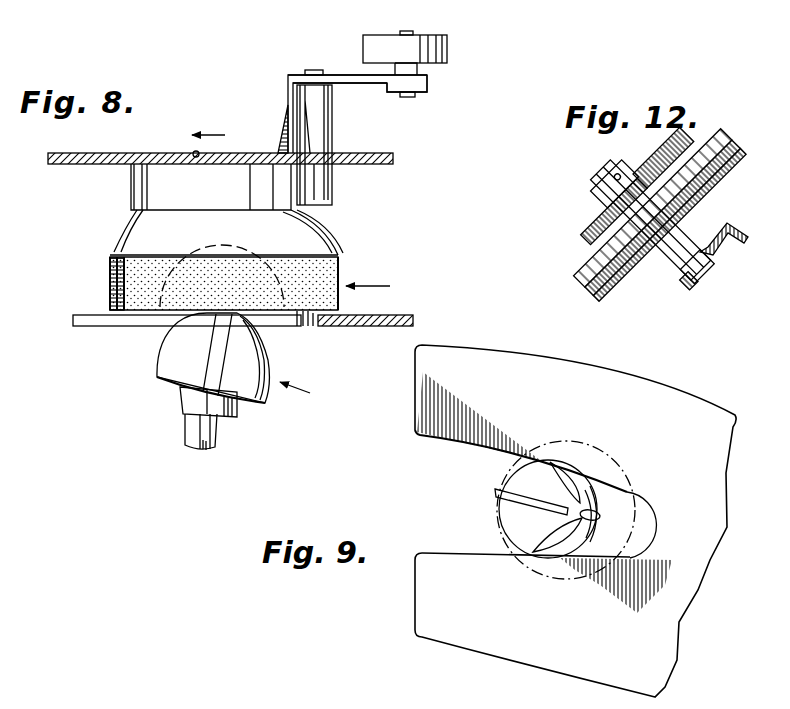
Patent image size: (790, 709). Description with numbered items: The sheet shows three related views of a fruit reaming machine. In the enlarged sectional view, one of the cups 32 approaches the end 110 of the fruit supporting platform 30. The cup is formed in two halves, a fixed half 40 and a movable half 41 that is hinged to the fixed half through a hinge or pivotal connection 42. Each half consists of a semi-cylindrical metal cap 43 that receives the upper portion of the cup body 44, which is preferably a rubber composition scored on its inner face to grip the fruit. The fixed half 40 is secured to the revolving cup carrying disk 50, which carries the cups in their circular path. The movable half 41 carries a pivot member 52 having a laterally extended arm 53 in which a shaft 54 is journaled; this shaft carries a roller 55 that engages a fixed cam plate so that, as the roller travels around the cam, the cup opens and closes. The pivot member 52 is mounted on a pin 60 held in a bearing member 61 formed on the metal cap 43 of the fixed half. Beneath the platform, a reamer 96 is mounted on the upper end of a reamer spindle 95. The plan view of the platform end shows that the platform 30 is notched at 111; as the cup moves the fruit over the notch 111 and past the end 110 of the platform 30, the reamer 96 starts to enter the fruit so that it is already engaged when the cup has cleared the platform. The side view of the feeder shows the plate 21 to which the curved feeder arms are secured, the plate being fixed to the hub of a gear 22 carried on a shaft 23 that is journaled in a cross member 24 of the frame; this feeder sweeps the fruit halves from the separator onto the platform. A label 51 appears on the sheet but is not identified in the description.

In FIG. 12, the plate 21 is at (680, 142).
In FIG. 12, the gear 22 is at (606, 258).
In FIG. 12, the shaft 23 is at (622, 200).
In FIG. 12, the cross member 24 is at (672, 290).
In FIG. 8, the platform 30 is at (383, 322).
In FIG. 9, the platform 30 is at (630, 378).
In FIG. 8, the cups 32 is at (128, 190).
In FIG. 8, the fixed half 40 is at (328, 225).
In FIG. 8, the movable half 41 is at (127, 217).
In FIG. 8, the hinge or pivotal connection 42 is at (286, 110).
In FIG. 8, the metal cap 43 is at (291, 197).
In FIG. 8, the cup body 44 is at (115, 268).
In FIG. 8, the revolving cup carrying disk 50 is at (157, 153).
In FIG. 8, the spring 51 is at (280, 152).
In FIG. 8, the pivot member 52 is at (288, 86).
In FIG. 8, the arm 53 is at (366, 76).
In FIG. 8, the shaft 54 is at (404, 33).
In FIG. 8, the roller 55 is at (447, 47).
In FIG. 8, the pin 60 is at (320, 60).
In FIG. 8, the bearing member 61 is at (333, 122).
In FIG. 8, the reamer spindle 95 is at (198, 421).
In FIG. 8, the reamer 96 is at (188, 343).
In FIG. 9, the reamer 96 is at (522, 512).
In FIG. 8, the end of the platform 110 is at (73, 318).
In FIG. 9, the end of the platform 110 is at (416, 397).
In FIG. 8, the notch 111 is at (300, 327).
In FIG. 9, the notch 111 is at (486, 452).